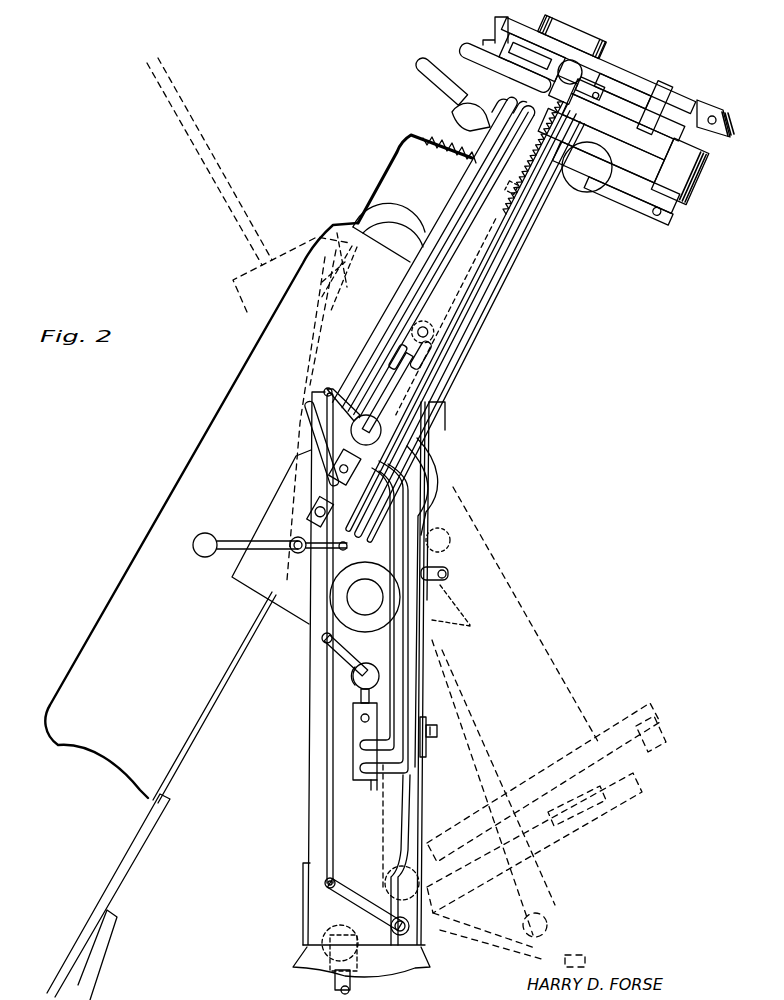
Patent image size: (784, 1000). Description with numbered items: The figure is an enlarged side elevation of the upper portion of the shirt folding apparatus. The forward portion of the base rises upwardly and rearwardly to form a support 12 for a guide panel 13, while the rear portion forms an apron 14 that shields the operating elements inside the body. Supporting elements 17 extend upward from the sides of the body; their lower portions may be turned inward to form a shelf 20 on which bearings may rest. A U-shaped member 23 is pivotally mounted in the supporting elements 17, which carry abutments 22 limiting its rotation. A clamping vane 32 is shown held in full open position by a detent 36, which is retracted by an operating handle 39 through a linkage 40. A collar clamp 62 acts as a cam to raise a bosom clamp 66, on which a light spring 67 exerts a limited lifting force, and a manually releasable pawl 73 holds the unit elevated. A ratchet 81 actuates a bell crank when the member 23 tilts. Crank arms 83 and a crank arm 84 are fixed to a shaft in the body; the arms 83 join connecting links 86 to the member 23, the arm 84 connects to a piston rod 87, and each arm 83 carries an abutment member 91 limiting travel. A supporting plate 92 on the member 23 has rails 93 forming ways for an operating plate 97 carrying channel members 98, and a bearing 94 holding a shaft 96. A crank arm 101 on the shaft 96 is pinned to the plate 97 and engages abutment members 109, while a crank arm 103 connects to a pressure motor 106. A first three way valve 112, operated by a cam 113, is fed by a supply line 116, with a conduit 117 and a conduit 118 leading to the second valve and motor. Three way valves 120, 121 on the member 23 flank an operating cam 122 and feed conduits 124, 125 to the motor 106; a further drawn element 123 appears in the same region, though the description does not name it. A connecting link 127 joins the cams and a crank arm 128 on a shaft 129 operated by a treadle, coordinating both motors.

The support 12 is at (95, 965).
The guide panel 13 is at (131, 853).
The apron 14 is at (303, 898).
The supporting elements 17 is at (309, 806).
The shelf 20 is at (312, 931).
The abutments 22 is at (362, 622).
The U-shaped member 23 is at (246, 580).
The clamping vane 32 is at (100, 643).
The detent 36 is at (557, 110).
The operating handle 39 is at (204, 558).
The linkage 40 is at (528, 223).
The collar clamp 62 is at (398, 212).
The bosom clamp 66 is at (396, 154).
The light spring 67 is at (462, 127).
The manually releasable pawl 73 is at (424, 70).
The ratchet 81 is at (438, 582).
The crank arms 83 is at (390, 828).
The crank arm 84 is at (386, 878).
The connecting links 86 is at (430, 428).
The piston rod 87 is at (335, 984).
The abutment member 91 is at (422, 748).
The supporting plate 92 is at (467, 53).
The rails 93 is at (499, 32).
The bearing 94 is at (690, 196).
The shaft 96 is at (714, 112).
The operating plate 97 is at (529, 36).
The channel members 98 is at (526, 58).
The crank arm 101 is at (641, 80).
The crank arm 103 is at (624, 199).
The pressure motor 106 is at (587, 182).
The abutment members 109 is at (670, 106).
The first three way valve 112 is at (362, 783).
The cam 113 is at (368, 671).
The supply line 116 is at (384, 792).
The conduit 117 is at (447, 316).
The conduit 118 is at (504, 270).
The three way valve 120 is at (300, 518).
The three way valve 121 is at (380, 384).
The operating cam 122 is at (364, 415).
The curved tube 123 is at (438, 482).
The conduit 124 is at (450, 228).
The conduit 125 is at (465, 266).
The connecting link 127 is at (327, 751).
The crank arm 128 is at (356, 892).
The shaft 129 is at (410, 931).